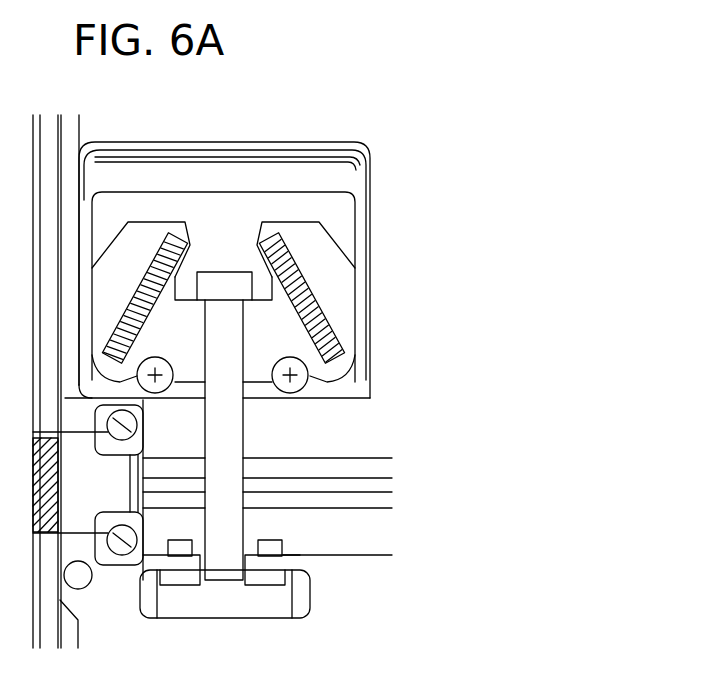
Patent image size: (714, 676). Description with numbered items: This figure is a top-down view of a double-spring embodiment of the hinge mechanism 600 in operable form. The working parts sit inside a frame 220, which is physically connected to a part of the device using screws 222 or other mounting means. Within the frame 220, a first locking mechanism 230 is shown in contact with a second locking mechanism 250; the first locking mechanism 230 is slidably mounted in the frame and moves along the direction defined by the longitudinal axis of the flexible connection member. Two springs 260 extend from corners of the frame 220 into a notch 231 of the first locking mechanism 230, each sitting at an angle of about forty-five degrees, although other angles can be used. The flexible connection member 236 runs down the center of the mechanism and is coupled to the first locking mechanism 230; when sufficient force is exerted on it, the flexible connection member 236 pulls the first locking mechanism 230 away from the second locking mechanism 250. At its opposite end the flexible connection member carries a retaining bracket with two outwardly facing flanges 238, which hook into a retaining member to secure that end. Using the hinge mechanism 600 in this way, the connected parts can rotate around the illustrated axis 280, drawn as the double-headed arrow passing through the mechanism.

The hinge mechanism 600 is at (289, 96).
The second locking mechanism 250 is at (330, 172).
The frame 220 is at (372, 215).
The first locking mechanism 230 is at (340, 235).
The notch 231 is at (308, 258).
The springs 260 is at (330, 323).
The screws 222 is at (302, 378).
The flexible connection member 236 is at (232, 422).
The axis 280 is at (22, 487).
The outwardly facing flanges 238 is at (270, 578).